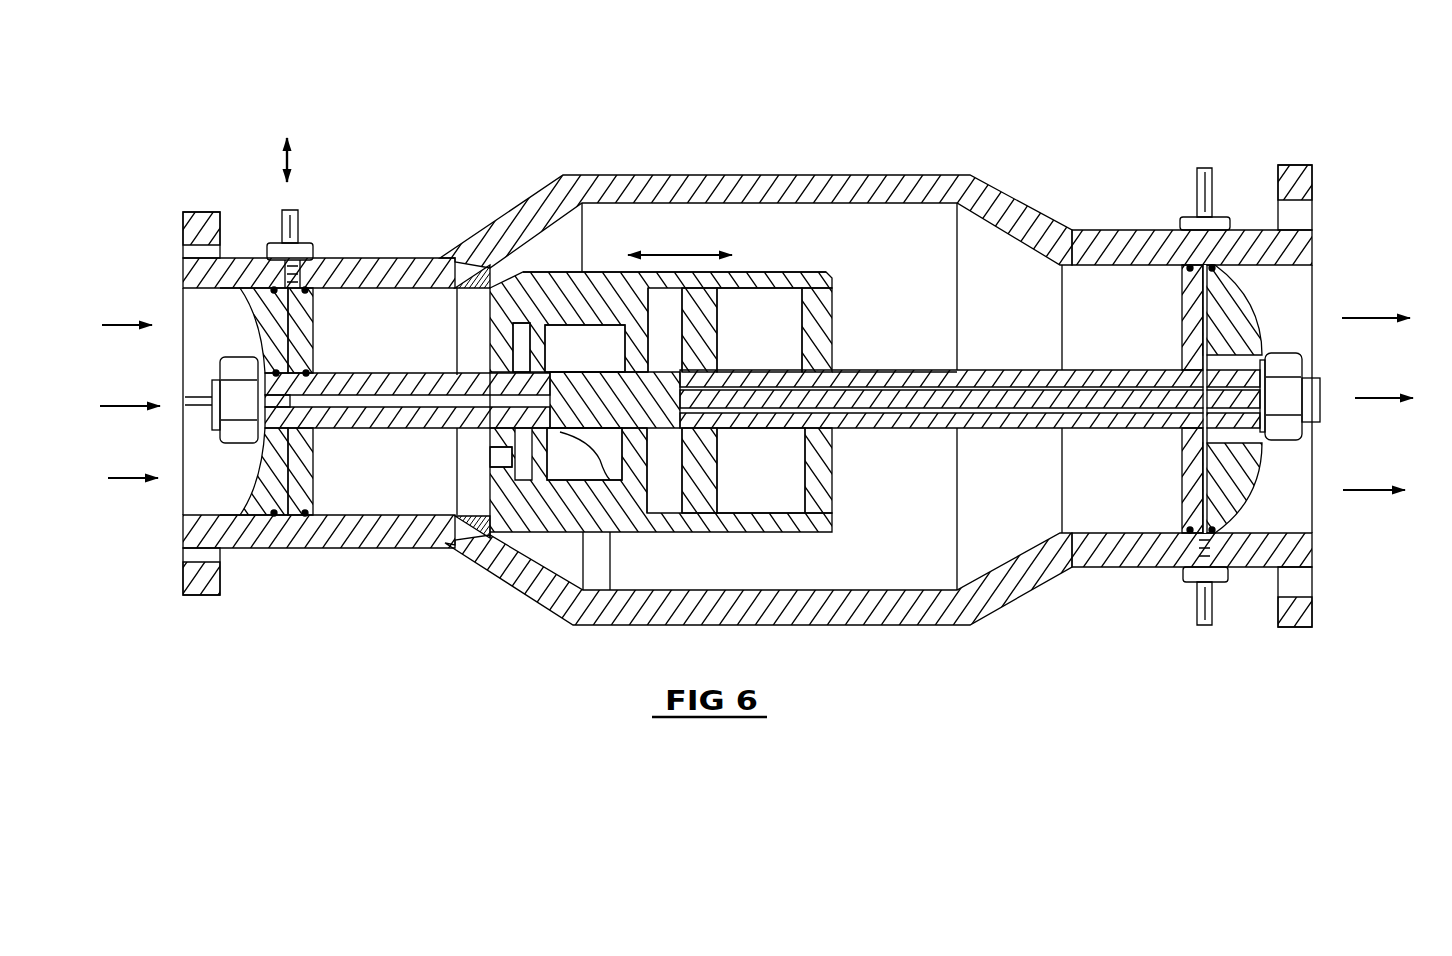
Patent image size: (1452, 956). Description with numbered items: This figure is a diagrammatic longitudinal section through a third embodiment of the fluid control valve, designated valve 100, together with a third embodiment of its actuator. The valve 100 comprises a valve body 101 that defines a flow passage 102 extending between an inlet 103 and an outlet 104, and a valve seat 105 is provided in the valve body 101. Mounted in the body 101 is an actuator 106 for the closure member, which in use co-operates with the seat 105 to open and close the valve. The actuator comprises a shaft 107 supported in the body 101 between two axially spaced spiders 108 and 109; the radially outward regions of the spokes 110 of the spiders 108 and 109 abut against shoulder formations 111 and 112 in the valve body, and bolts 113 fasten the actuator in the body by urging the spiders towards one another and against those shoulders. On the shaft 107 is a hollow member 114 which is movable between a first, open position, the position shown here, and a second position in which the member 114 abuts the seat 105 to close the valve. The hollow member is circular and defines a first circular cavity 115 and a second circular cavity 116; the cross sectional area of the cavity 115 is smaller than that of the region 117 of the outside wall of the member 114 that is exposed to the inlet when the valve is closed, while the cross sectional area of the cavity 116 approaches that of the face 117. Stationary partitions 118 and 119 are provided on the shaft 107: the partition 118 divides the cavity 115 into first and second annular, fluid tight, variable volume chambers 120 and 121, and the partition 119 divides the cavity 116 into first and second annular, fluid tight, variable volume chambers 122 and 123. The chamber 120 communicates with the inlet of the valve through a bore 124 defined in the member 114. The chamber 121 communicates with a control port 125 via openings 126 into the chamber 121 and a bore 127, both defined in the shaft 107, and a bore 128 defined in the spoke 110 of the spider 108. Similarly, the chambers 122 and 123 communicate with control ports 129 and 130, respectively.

The valve 100 is at (1062, 118).
The valve body 101 is at (832, 173).
The flow passage 102 is at (742, 213).
The inlet 103 is at (200, 493).
The outlet 104 is at (1297, 288).
The valve seat 105 is at (468, 264).
The actuator 106 is at (848, 358).
The shaft 107 is at (996, 372).
The spider 108 is at (316, 475).
The spider 109 is at (1180, 482).
The spokes 110 is at (262, 517).
The shoulder formation 111 is at (330, 548).
The shoulder formation 112 is at (1190, 540).
The bolts 113 is at (1308, 364).
The hollow member 114 is at (828, 272).
The first circular cavity 115 is at (587, 322).
The second circular cavity 116 is at (786, 490).
The region of outside wall 117 is at (455, 528).
The stationary partition 118 is at (548, 468).
The stationary partition 119 is at (712, 480).
The first variable volume chamber 120 is at (519, 330).
The second variable volume chamber 121 is at (585, 350).
The first variable volume chamber 122 is at (662, 300).
The second variable volume chamber 123 is at (772, 344).
The bore 124 is at (492, 458).
The control port 125 is at (283, 214).
The openings 126 is at (608, 537).
The bore 127 is at (370, 393).
The bore 128 is at (288, 322).
The control port 129 is at (1215, 605).
The control port 130 is at (1198, 195).